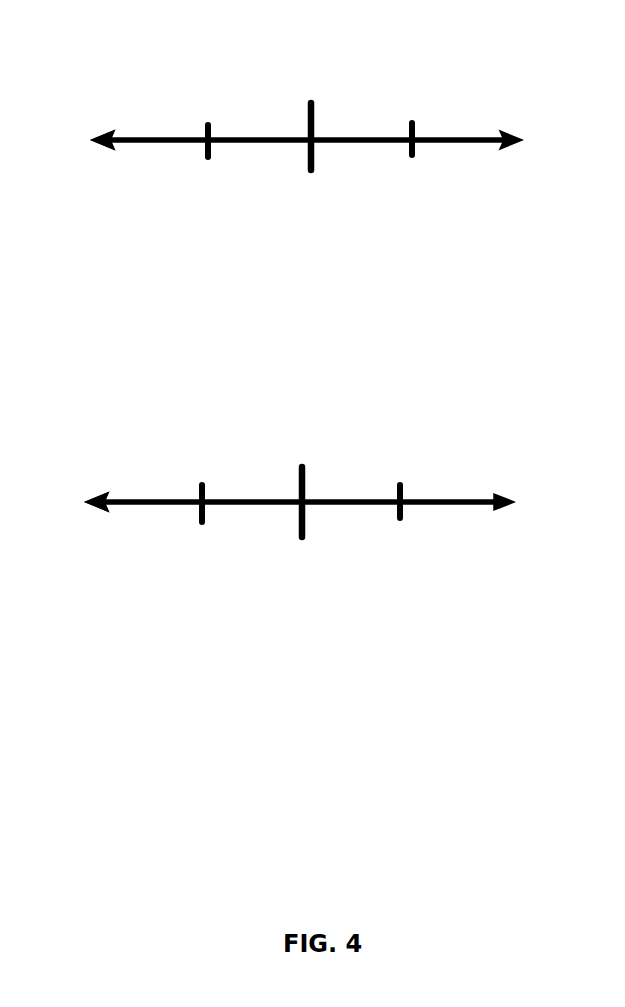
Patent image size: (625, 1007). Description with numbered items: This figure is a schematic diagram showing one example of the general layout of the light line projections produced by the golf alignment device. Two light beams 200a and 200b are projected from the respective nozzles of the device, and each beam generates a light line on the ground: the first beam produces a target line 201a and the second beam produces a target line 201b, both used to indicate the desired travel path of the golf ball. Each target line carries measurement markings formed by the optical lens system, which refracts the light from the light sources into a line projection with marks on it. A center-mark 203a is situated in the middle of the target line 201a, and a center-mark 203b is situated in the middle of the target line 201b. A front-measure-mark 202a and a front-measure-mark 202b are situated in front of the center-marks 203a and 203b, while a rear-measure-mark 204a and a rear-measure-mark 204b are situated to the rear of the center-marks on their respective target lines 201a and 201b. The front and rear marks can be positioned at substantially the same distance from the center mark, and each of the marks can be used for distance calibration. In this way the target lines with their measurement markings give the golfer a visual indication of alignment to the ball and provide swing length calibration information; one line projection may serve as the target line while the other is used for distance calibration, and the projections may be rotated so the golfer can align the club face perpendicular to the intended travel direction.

The light beam 200a is at (351, 110).
The target line 201a is at (145, 147).
The front-measure-mark 202a is at (200, 152).
The center-mark 203a is at (307, 167).
The rear-measure-mark 204a is at (410, 155).
The light beam 200b is at (339, 473).
The target line 201b is at (135, 512).
The front-measure-mark 202b is at (198, 517).
The center-mark 203b is at (300, 534).
The rear-measure-mark 204b is at (392, 520).